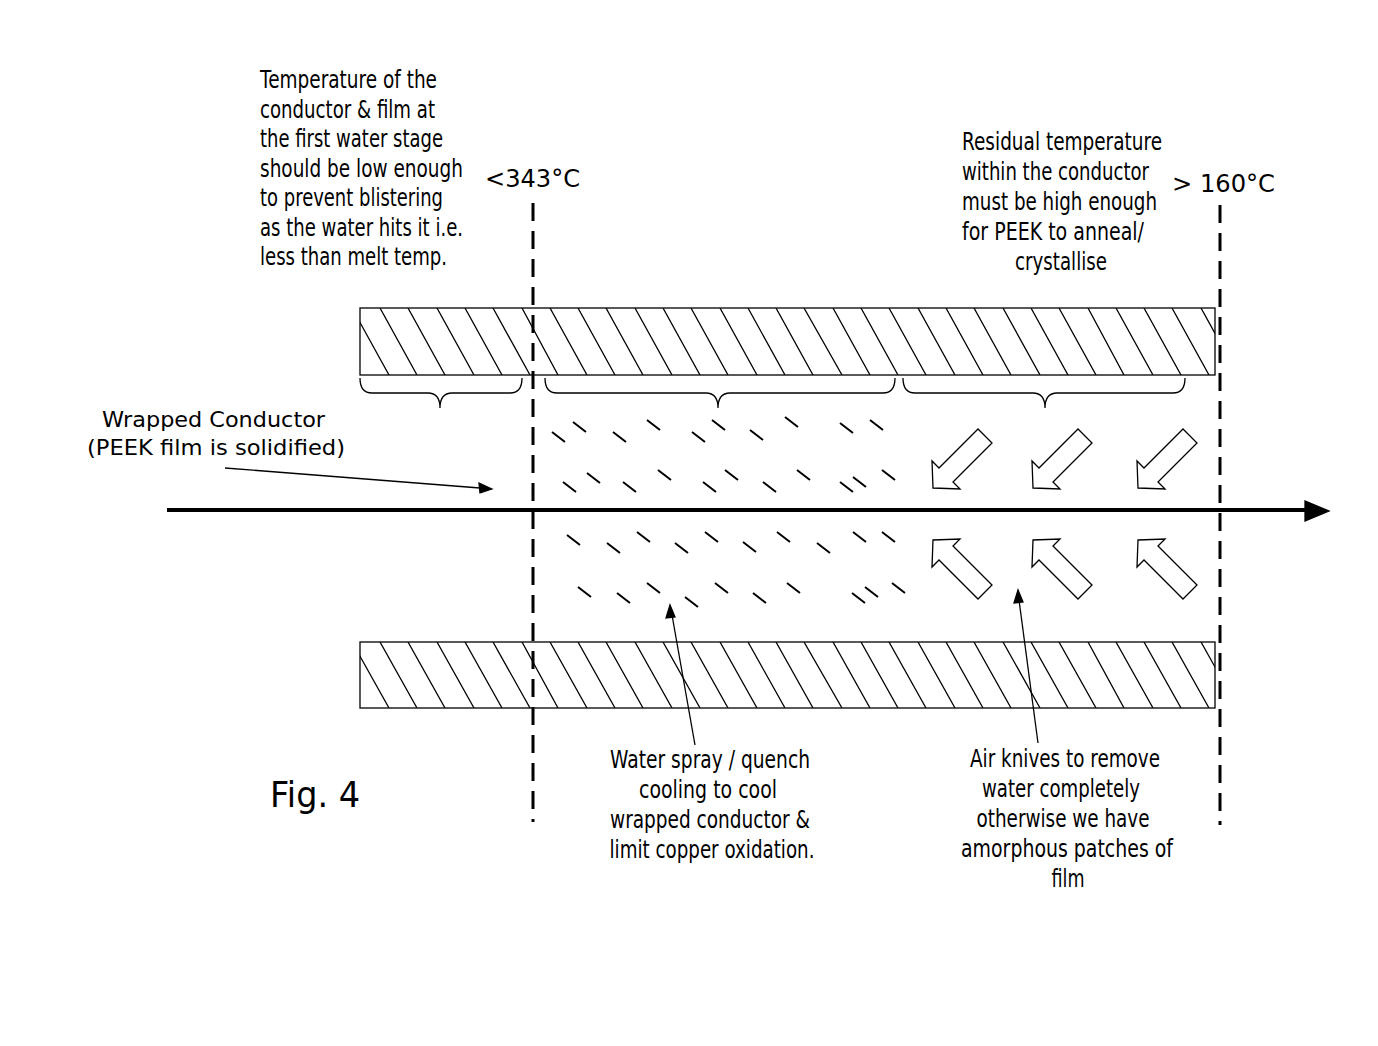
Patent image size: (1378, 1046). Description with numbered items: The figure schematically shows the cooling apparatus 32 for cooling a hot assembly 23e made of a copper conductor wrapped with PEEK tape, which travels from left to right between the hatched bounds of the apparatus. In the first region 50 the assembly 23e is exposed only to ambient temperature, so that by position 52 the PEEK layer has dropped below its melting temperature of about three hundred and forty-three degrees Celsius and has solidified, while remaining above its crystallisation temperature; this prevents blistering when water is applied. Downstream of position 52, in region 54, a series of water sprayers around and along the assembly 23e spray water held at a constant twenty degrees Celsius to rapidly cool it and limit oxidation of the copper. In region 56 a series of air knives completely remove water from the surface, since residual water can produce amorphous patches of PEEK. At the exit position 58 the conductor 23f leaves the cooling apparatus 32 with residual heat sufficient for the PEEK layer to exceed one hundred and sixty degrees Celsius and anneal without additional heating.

The cooling apparatus 32 is at (324, 316).
The assembly 23e is at (228, 511).
The conductor 23f is at (1305, 537).
The first region 50 is at (441, 408).
The position 52 is at (533, 530).
The region 54 is at (725, 492).
The region 56 is at (1050, 488).
The exit position 58 is at (1234, 302).